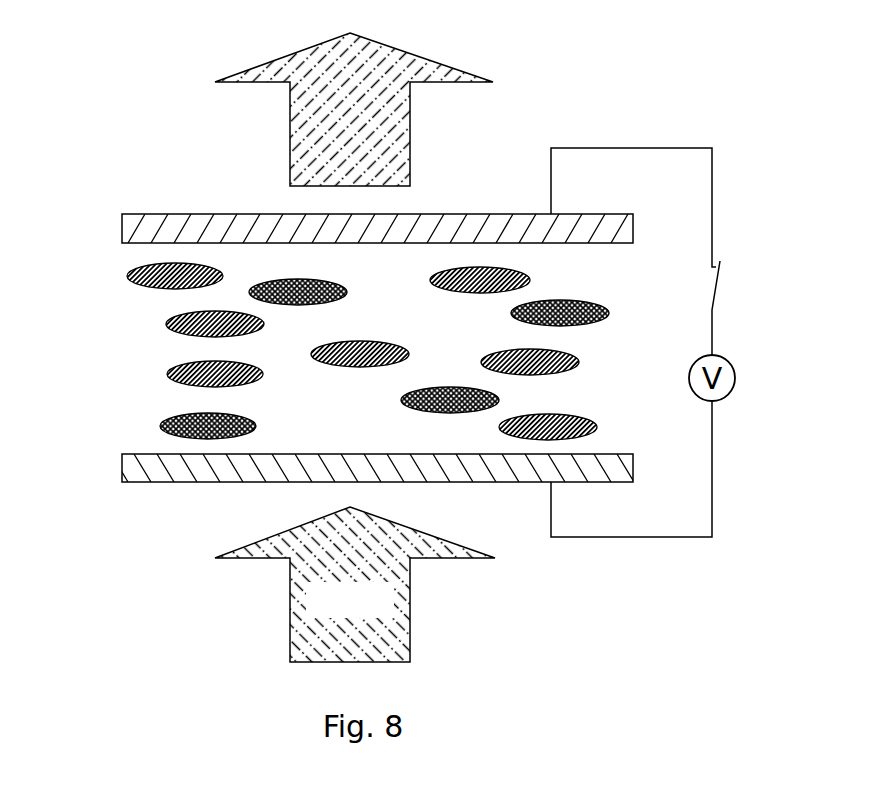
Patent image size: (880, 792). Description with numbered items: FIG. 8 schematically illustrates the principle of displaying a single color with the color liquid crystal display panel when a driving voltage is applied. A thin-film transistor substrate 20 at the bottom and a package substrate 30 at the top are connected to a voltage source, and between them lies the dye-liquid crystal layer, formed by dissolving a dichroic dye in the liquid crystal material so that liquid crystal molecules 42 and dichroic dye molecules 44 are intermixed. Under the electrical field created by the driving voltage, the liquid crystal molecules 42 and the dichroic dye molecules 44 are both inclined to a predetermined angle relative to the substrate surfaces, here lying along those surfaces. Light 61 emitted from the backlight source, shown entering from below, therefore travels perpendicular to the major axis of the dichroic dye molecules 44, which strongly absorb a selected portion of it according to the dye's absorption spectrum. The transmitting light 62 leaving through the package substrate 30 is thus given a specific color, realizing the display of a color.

The transmitting light 62 is at (320, 163).
The package substrate 30 is at (153, 228).
The liquid crystal molecules 42 is at (150, 277).
The dichroic dye molecules 44 is at (155, 427).
The thin-film transistor substrate 20 is at (153, 468).
The light emitting from the backlight source 61 is at (315, 646).